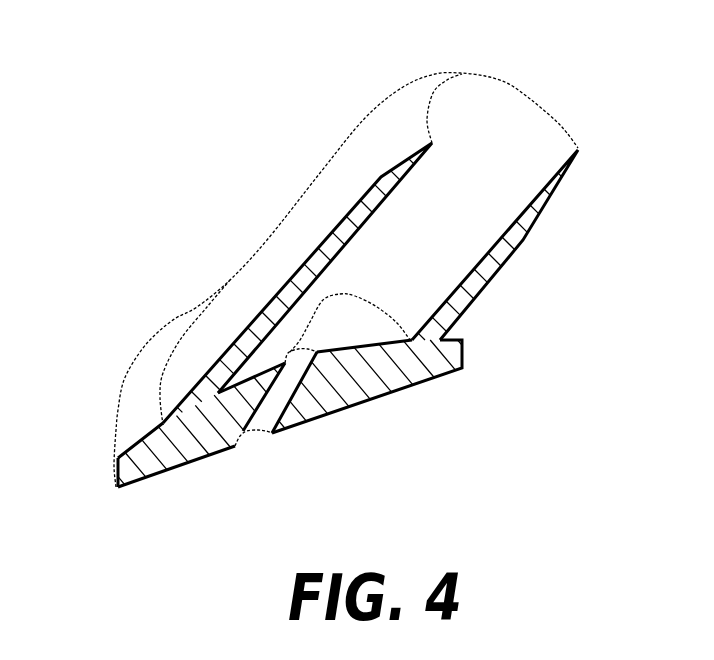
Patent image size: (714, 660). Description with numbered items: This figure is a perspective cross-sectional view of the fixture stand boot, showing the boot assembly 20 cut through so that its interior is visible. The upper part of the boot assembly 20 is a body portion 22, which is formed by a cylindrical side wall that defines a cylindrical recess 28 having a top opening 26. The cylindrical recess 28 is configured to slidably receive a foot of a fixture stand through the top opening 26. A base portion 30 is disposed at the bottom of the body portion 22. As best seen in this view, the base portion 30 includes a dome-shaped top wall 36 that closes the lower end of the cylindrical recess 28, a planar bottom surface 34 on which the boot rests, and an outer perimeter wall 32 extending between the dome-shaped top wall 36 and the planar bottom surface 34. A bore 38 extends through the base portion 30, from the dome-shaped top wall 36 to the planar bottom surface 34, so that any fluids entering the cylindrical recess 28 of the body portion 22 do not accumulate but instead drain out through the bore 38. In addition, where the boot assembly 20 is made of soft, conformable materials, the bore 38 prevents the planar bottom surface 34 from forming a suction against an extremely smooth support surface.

The boot assembly 20 is at (263, 148).
The body portion 22 is at (275, 205).
The top opening 26 is at (547, 132).
The cylindrical recess 28 is at (463, 177).
The base portion 30 is at (470, 378).
The outer perimeter wall 32 is at (112, 467).
The planar bottom surface 34 is at (367, 400).
The dome-shaped top wall 36 is at (133, 410).
The bore 38 is at (178, 487).